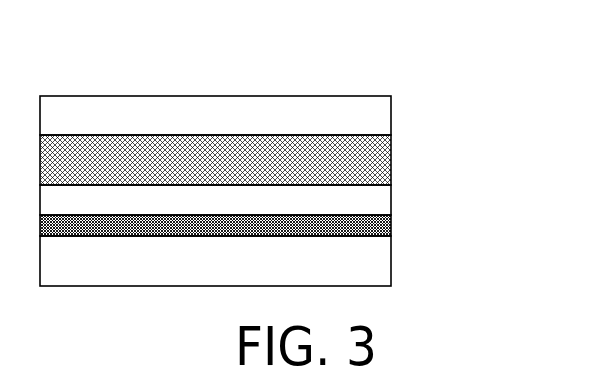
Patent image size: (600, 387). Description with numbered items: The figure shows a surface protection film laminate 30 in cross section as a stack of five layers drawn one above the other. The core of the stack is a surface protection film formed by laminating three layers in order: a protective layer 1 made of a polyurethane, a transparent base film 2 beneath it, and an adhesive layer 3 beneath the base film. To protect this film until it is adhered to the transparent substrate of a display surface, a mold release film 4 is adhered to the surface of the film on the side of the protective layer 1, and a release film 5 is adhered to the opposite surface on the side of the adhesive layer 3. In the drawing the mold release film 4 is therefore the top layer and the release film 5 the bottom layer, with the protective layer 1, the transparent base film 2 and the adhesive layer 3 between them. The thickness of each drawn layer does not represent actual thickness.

The surface protection film laminate 30 is at (279, 162).
The mold release film 4 is at (377, 113).
The protective layer 1 is at (377, 150).
The transparent base film 2 is at (377, 197).
The adhesive layer 3 is at (377, 233).
The release film 5 is at (377, 270).